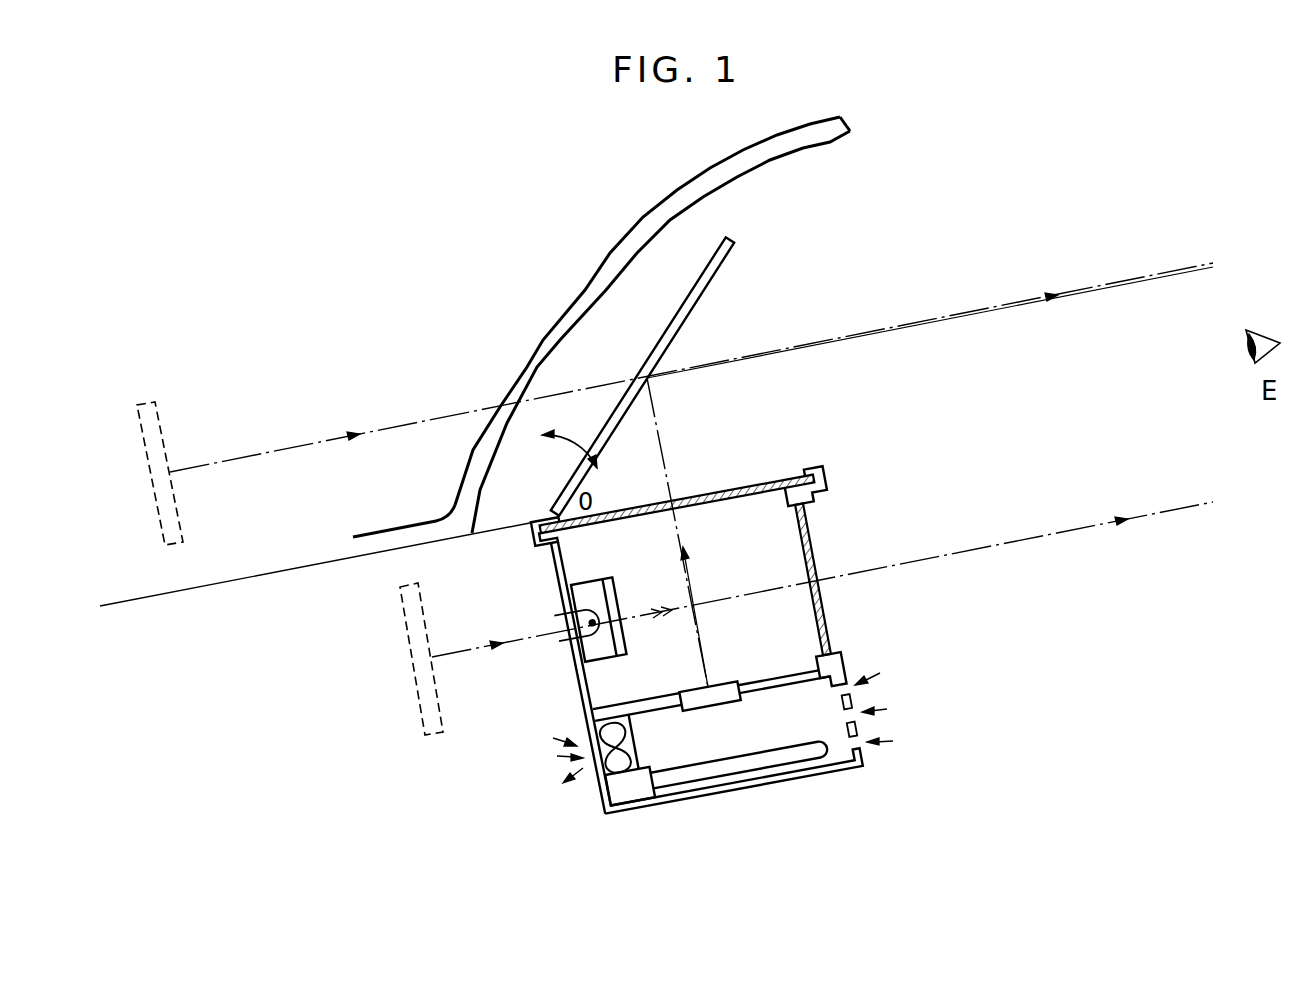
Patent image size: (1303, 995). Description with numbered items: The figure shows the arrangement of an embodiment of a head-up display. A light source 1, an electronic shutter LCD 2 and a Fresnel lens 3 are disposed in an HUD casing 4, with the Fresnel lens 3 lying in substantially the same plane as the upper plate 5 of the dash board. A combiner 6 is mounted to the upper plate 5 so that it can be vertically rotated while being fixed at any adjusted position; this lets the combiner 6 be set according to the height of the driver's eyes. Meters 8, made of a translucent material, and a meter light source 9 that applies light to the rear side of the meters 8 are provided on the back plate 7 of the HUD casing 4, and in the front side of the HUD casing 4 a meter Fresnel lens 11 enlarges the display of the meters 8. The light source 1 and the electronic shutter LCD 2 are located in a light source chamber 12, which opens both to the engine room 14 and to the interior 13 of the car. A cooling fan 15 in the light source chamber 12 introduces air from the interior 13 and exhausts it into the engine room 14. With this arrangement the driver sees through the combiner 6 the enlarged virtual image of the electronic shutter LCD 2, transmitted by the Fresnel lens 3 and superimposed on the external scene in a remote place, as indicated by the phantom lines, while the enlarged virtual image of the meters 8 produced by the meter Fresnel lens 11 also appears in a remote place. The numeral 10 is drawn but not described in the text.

The light source 1 is at (760, 766).
The electronic shutter LCD 2 is at (718, 690).
The Fresnel lens 3 is at (700, 497).
The HUD casing 4 is at (758, 794).
The upper plate of the dash board 5 is at (507, 523).
The combiner 6 is at (701, 292).
The back plate of the HUD casing 7 is at (597, 678).
The meters 8 is at (620, 637).
The meter light source 9 is at (595, 580).
The air inlet 10 is at (847, 655).
The meter Fresnel lens 11 is at (825, 590).
The light source chamber 12 is at (702, 749).
The interior of a car 13 is at (1054, 660).
The engine room 14 is at (484, 807).
The cooling fan 15 is at (600, 757).